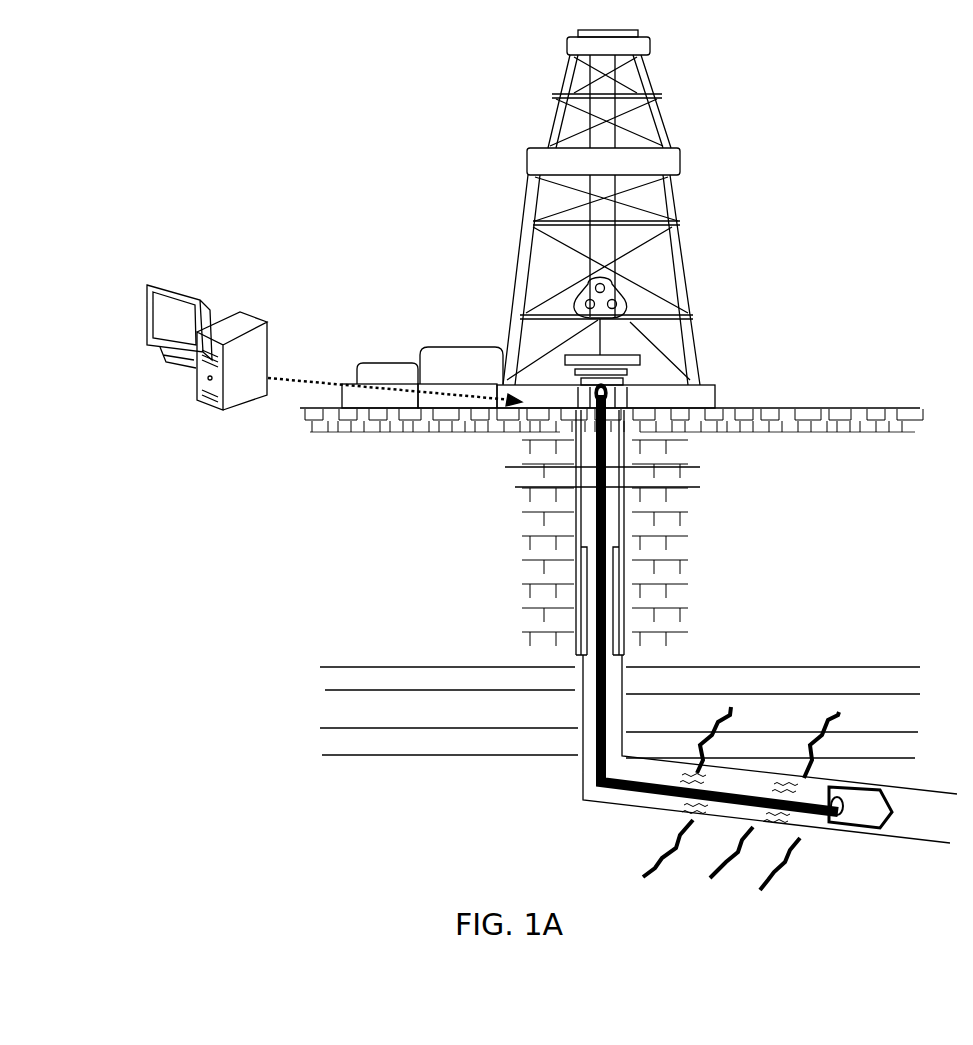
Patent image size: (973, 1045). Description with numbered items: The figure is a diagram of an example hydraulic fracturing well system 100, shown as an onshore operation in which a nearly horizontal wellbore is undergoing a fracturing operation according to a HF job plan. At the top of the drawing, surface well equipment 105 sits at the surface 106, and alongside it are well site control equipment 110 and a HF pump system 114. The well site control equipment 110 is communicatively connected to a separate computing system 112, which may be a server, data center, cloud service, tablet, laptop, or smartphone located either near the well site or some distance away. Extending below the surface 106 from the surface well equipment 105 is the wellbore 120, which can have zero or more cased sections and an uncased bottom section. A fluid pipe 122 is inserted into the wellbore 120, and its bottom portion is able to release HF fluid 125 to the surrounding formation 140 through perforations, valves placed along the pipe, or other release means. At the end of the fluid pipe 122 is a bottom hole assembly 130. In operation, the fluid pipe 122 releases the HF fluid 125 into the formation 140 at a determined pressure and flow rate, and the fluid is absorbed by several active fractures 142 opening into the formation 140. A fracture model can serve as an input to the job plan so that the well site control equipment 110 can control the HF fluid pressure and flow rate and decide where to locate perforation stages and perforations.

The HF well system 100 is at (183, 81).
The surface well equipment 105 is at (682, 240).
The surface 106 is at (851, 402).
The well site control equipment 110 is at (500, 386).
The computing system 112 is at (255, 315).
The HF pump system 114 is at (583, 393).
The wellbore 120 is at (575, 520).
The fluid pipe 122 is at (598, 771).
The HF fluid 125 is at (660, 772).
The bottom hole assembly 130 is at (880, 789).
The formation 140 is at (894, 648).
The active fractures 142 is at (836, 707).